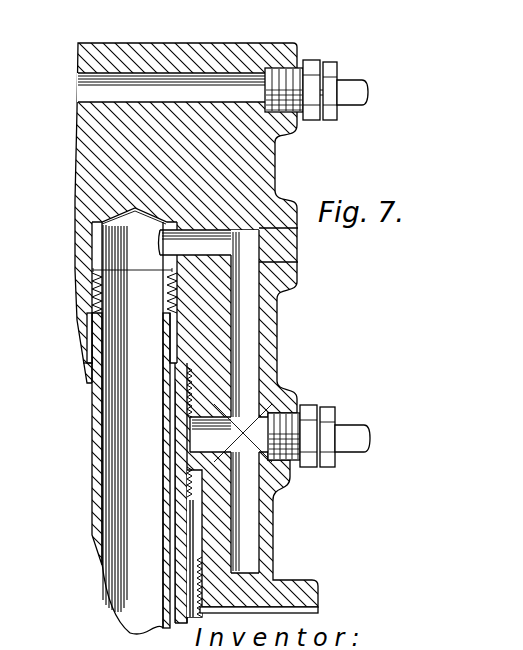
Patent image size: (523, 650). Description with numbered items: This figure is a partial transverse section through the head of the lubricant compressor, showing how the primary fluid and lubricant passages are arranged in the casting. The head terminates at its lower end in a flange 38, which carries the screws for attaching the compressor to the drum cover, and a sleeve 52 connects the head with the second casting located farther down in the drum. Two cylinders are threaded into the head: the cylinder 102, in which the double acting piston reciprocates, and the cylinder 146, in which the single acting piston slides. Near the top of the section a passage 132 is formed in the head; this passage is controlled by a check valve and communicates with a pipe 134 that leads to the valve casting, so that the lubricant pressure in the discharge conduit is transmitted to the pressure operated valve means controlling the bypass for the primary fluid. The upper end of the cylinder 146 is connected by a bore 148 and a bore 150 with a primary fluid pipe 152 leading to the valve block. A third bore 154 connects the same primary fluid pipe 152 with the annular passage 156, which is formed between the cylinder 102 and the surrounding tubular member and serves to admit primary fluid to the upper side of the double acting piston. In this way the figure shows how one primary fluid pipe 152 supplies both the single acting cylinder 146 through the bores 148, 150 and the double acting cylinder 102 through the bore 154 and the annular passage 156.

The flange 38 is at (319, 593).
The sleeve 52 is at (208, 615).
The cylinder 102 is at (193, 597).
The passage 132 is at (197, 83).
The pipe 134 is at (340, 63).
The cylinder 146 is at (92, 388).
The bore 148 is at (200, 243).
The bore 150 is at (245, 340).
The primary fluid pipe 152 is at (355, 430).
The third bore 154 is at (246, 433).
The annular passage 156 is at (190, 542).